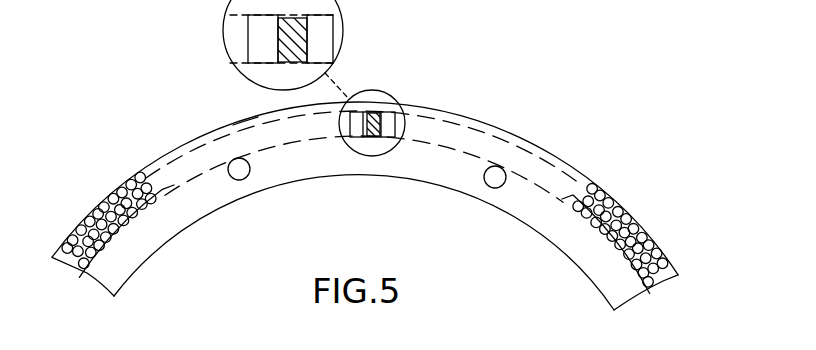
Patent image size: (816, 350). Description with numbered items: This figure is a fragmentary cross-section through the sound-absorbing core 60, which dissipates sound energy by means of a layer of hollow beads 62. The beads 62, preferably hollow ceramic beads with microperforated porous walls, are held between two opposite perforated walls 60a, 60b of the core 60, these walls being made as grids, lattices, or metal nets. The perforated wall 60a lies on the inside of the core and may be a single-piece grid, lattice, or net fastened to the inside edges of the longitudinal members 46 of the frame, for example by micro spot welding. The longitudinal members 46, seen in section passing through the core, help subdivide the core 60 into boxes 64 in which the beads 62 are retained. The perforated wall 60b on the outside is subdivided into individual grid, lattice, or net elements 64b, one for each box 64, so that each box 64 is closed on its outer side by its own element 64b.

The longitudinal member 46 is at (374, 118).
The core 60 is at (492, 131).
The perforated wall 60a is at (420, 113).
The perforated wall 60b is at (467, 153).
The hollow bead 62 is at (150, 205).
The box 64 is at (165, 170).
The net element 64b is at (245, 123).